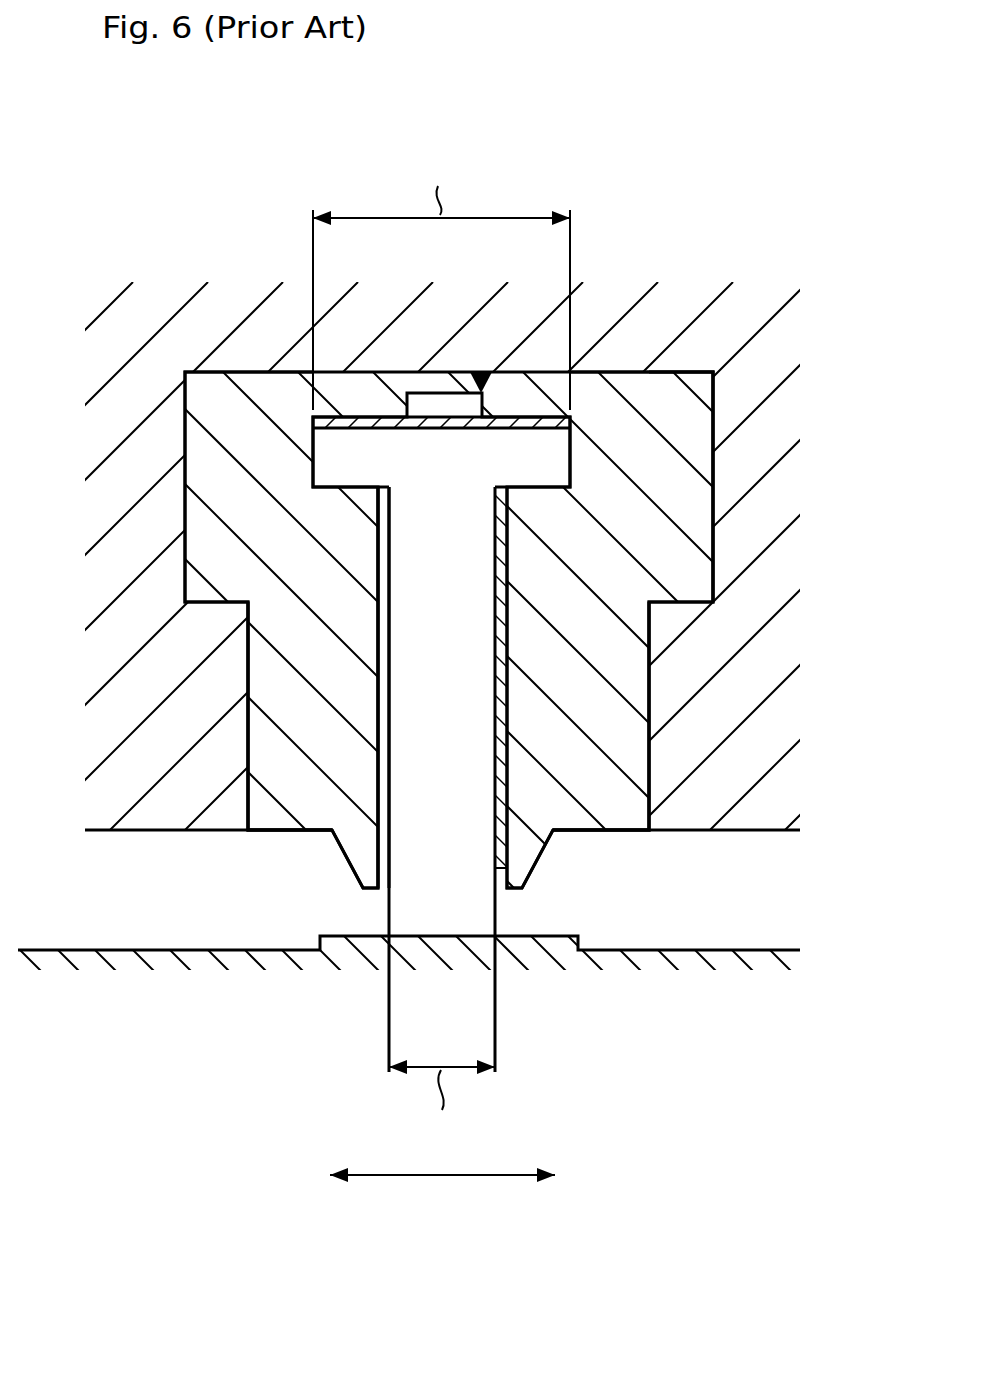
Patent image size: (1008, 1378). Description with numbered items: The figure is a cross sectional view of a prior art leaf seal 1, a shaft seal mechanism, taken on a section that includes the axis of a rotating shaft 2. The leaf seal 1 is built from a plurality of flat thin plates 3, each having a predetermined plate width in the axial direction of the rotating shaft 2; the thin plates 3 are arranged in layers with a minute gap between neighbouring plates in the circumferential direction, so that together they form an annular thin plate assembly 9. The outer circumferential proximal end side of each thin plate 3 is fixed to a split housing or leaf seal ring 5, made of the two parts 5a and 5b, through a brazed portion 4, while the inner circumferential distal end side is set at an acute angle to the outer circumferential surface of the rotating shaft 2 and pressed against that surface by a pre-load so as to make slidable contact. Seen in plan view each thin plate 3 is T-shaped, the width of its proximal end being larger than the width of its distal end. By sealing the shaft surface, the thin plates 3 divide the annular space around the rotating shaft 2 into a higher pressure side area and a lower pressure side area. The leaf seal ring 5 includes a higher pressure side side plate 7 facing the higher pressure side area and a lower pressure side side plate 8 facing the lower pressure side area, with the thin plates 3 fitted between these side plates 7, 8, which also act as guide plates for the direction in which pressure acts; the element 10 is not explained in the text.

The leaf seal 1 is at (823, 505).
The rotating shaft 2 is at (652, 947).
The thin plate 3 is at (443, 912).
The brazed portion 4 is at (375, 417).
The leaf seal ring 5 is at (185, 410).
The leaf seal ring half 5a is at (228, 397).
The leaf seal ring half 5b is at (612, 405).
The higher pressure side side plate 7 is at (630, 720).
The lower pressure side side plate 8 is at (265, 768).
The thin plate assembly 9 is at (405, 702).
The seal groove 10 is at (703, 420).